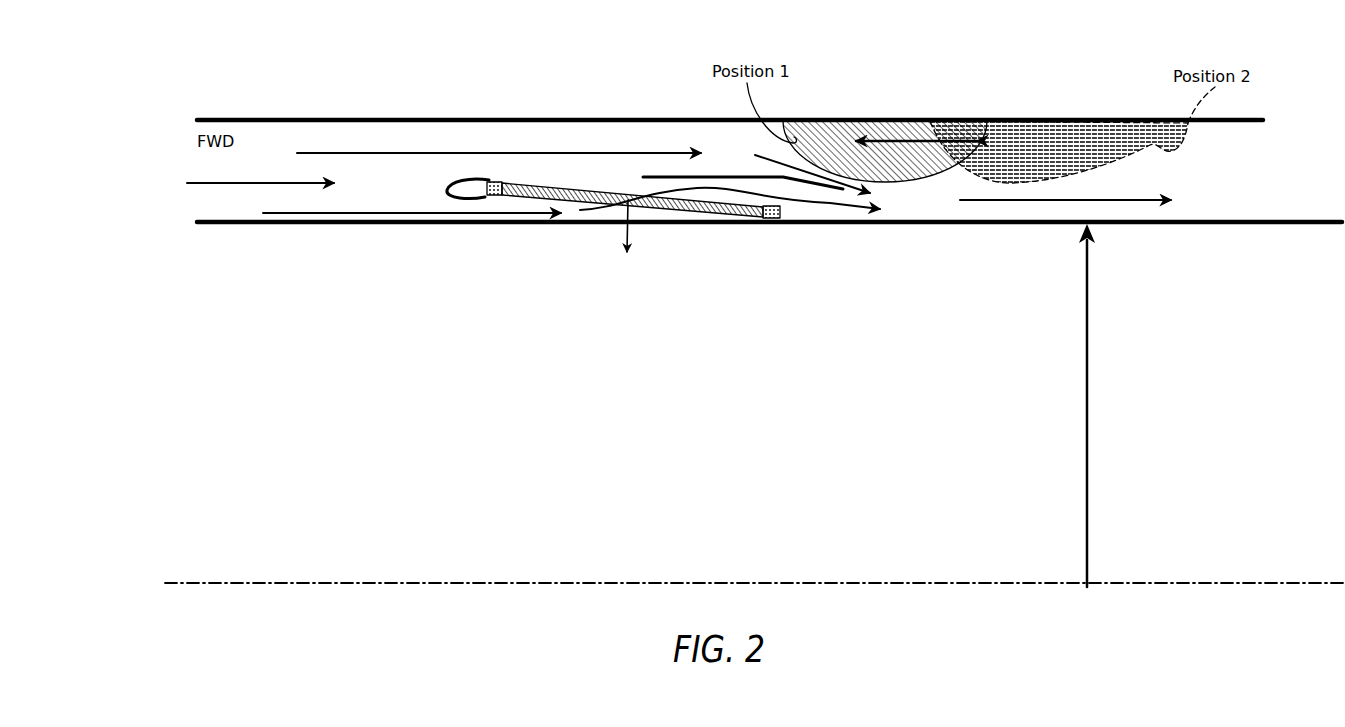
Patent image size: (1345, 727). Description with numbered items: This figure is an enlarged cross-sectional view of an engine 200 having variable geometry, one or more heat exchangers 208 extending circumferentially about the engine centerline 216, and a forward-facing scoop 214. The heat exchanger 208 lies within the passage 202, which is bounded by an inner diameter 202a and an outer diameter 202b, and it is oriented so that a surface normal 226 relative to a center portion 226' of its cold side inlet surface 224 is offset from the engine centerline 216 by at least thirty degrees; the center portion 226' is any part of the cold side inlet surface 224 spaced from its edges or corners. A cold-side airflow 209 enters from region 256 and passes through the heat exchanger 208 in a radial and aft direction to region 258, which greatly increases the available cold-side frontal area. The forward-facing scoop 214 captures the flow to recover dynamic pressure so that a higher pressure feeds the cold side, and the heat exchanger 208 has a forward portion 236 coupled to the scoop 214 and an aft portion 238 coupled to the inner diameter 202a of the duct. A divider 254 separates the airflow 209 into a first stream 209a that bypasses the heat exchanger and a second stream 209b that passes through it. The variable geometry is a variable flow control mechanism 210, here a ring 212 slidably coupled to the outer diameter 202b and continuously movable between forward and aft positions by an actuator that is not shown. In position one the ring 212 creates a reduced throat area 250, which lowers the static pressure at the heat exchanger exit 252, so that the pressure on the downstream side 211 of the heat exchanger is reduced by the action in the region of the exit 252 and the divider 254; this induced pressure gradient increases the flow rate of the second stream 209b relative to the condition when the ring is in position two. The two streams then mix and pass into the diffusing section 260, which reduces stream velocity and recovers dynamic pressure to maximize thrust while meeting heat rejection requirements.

The engine 200 is at (163, 104).
The passage 202 is at (210, 218).
The inner diameter of the passage 202a is at (242, 220).
The outer diameter of the passage 202b is at (332, 123).
The cold-side airflow 209 is at (223, 223).
The first stream 209a is at (317, 152).
The second stream 209b is at (323, 214).
The forward-facing scoop 214 is at (433, 197).
The forward portion 236 is at (498, 197).
The cold side inlet surface 224 is at (690, 211).
The region 256 is at (525, 206).
The center portion 226' is at (602, 249).
The surface normal 226 is at (659, 267).
The downstream side 211 is at (740, 199).
The aft portion 238 is at (783, 217).
The heat exchanger 208 is at (647, 176).
The divider 254 is at (737, 176).
The region 258 is at (660, 189).
The reduced throat area 250 is at (833, 178).
The heat exchanger exit 252 is at (830, 199).
The ring 212 is at (897, 184).
The variable flow control mechanism 210 is at (940, 196).
The diffusing section 260 is at (973, 189).
The engine centerline 216 is at (230, 583).